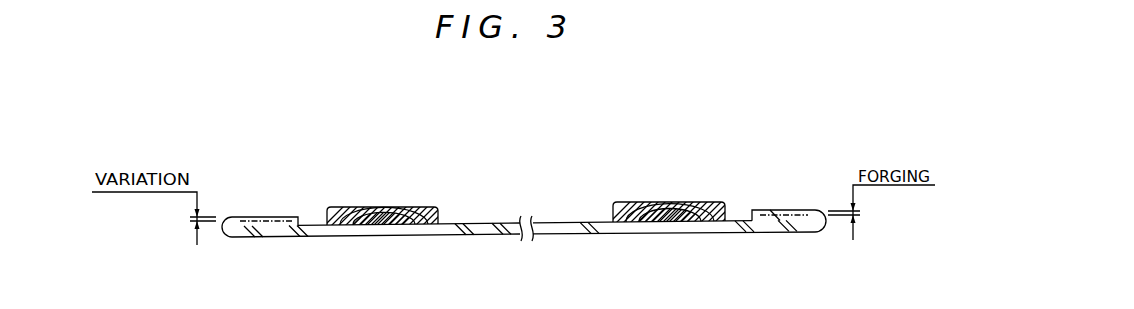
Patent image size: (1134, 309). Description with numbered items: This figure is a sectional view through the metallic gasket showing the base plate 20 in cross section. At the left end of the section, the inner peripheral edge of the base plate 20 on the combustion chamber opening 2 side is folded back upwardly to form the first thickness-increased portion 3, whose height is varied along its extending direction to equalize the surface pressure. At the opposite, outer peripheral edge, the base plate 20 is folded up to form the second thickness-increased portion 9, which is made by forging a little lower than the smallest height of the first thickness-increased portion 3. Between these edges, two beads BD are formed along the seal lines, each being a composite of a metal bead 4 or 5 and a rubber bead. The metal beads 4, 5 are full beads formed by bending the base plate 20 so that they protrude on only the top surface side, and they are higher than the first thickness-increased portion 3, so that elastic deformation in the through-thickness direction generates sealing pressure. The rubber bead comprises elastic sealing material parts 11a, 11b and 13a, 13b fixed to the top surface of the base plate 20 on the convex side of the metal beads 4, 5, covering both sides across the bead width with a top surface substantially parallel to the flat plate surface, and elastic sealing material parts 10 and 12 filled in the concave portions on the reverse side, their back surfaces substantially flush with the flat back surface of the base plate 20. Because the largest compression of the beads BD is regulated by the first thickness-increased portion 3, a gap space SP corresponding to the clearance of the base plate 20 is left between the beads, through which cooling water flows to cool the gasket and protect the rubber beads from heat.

The combustion chamber opening 2 is at (222, 231).
The first thickness-increased portion 3 is at (273, 216).
The metal bead 4 is at (385, 208).
The metal bead 5 is at (670, 203).
The second thickness-increased portion 9 is at (788, 210).
The elastic sealing material part 10 is at (377, 237).
The elastic sealing material part 11a is at (345, 206).
The elastic sealing material part 11b is at (420, 206).
The elastic sealing material part 12 is at (663, 233).
The elastic sealing material part 13a is at (630, 203).
The elastic sealing material part 13b is at (707, 202).
The base plate 20 is at (739, 235).
The bead BD is at (363, 187).
The gap space SP is at (489, 208).